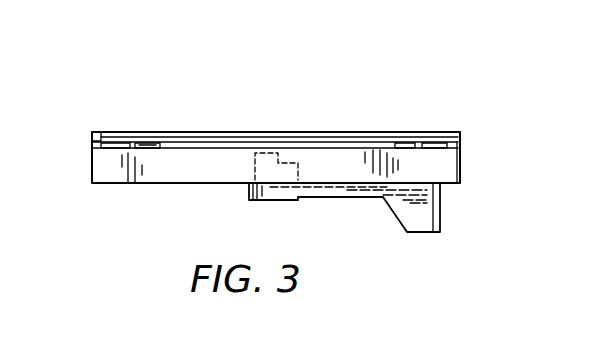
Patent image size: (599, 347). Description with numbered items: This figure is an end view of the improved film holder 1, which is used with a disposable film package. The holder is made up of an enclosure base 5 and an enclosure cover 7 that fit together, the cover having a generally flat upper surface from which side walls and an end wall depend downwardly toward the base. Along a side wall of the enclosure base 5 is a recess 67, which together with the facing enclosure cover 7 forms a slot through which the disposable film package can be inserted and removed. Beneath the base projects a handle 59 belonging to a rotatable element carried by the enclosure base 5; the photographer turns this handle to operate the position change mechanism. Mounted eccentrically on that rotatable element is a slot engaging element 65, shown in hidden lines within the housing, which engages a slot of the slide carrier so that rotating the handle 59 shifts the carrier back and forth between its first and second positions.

The film holder 1 is at (415, 108).
The enclosure base 5 is at (462, 150).
The enclosure cover 7 is at (359, 131).
The handle 59 is at (432, 215).
The slot engaging element 65 is at (274, 151).
The recess 67 is at (160, 144).